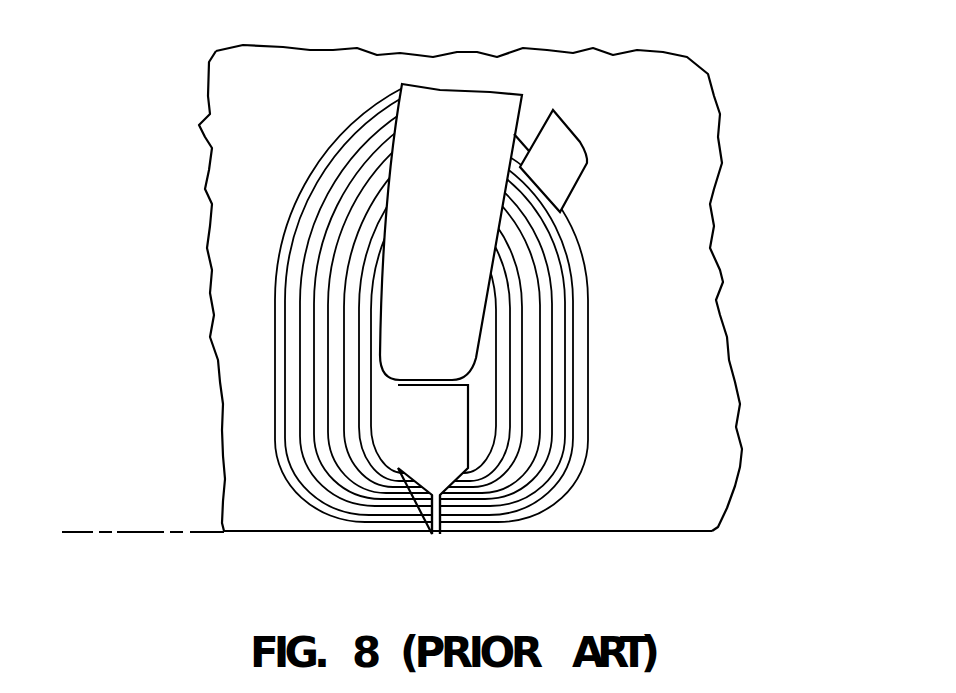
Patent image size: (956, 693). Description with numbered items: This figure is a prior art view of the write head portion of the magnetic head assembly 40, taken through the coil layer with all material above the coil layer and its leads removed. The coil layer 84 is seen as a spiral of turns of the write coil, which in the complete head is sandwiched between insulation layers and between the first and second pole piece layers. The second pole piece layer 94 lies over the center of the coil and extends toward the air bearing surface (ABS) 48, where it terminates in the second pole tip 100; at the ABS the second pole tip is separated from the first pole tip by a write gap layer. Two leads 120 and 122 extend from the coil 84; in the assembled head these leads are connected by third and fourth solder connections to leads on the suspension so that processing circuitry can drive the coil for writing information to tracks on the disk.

The magnetic head assembly 40 is at (598, 282).
The coil layer 84 is at (563, 390).
The lead 120 is at (462, 228).
The lead 122 is at (563, 132).
The second pole piece layer 94 is at (450, 447).
The second pole tip 100 is at (438, 537).
The air bearing surface (ABS) 48 is at (140, 530).